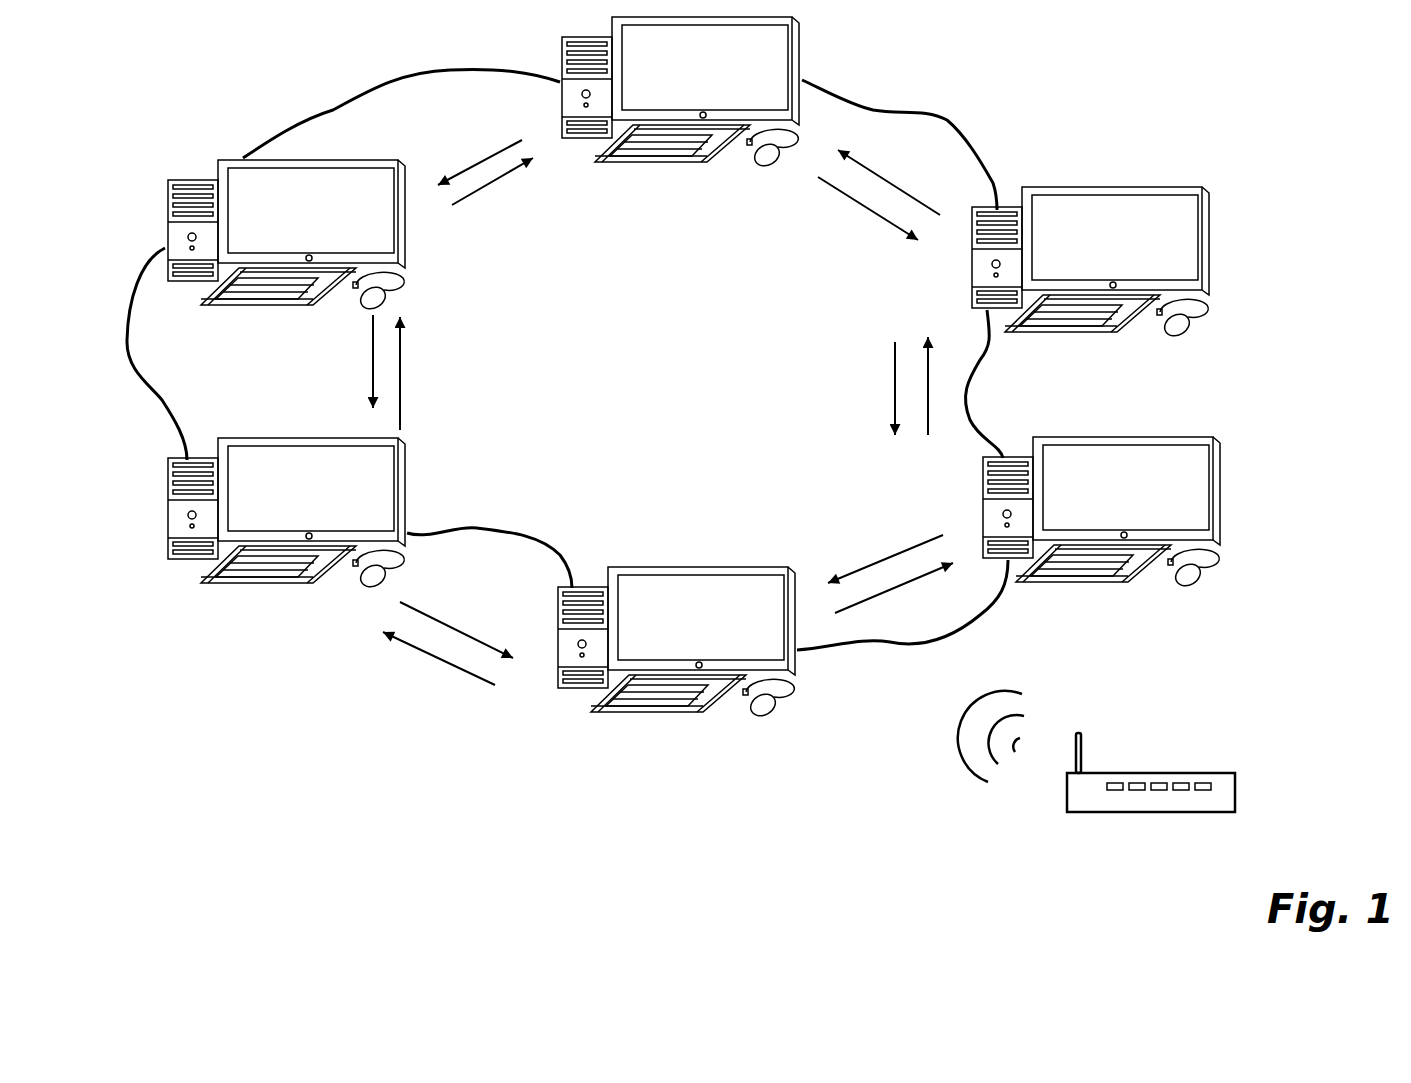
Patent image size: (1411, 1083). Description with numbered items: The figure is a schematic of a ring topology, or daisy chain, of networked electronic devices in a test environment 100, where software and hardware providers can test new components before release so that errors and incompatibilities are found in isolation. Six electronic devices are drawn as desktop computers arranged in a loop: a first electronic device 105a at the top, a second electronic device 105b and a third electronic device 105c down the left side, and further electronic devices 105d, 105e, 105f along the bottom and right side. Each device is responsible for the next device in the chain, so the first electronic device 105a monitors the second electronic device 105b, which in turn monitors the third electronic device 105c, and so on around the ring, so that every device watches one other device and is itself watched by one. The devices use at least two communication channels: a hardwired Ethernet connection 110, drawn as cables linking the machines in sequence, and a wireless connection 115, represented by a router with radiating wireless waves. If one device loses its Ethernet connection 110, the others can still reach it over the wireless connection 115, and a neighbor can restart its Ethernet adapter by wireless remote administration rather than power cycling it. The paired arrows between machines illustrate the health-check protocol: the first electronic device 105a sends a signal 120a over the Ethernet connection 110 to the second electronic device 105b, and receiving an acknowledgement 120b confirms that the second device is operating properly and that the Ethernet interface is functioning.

The test environment 100 is at (152, 134).
The first electronic device 105a is at (670, 165).
The second electronic device 105b is at (258, 305).
The third electronic device 105c is at (272, 585).
The electronic device 105d is at (650, 713).
The electronic device 105e is at (1073, 583).
The electronic device 105f is at (1063, 332).
The Ethernet connection 110 is at (923, 110).
The wireless connection 115 is at (1163, 773).
The signal 120a is at (462, 172).
The acknowledgement 120b is at (481, 187).